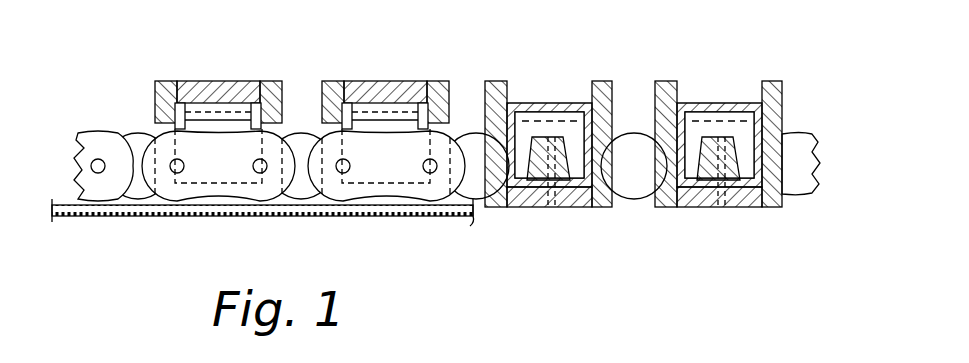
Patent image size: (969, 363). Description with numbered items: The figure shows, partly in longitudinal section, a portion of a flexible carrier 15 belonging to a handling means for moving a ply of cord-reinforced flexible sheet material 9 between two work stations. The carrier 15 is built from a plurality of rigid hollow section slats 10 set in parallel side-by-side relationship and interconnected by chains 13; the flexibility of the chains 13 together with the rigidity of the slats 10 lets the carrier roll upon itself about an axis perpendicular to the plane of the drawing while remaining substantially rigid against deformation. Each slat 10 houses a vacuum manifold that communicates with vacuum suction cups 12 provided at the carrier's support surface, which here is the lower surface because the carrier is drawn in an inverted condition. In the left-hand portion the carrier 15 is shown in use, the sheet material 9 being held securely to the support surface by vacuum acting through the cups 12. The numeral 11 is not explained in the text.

The ply of cord-reinforced flexible sheet material 9 is at (143, 216).
The rigid hollow section slat 10 is at (160, 93).
The carrier body 11 is at (557, 103).
The vacuum suction cup 12 is at (742, 207).
The chain 13 is at (440, 198).
The flexible carrier 15 is at (457, 152).